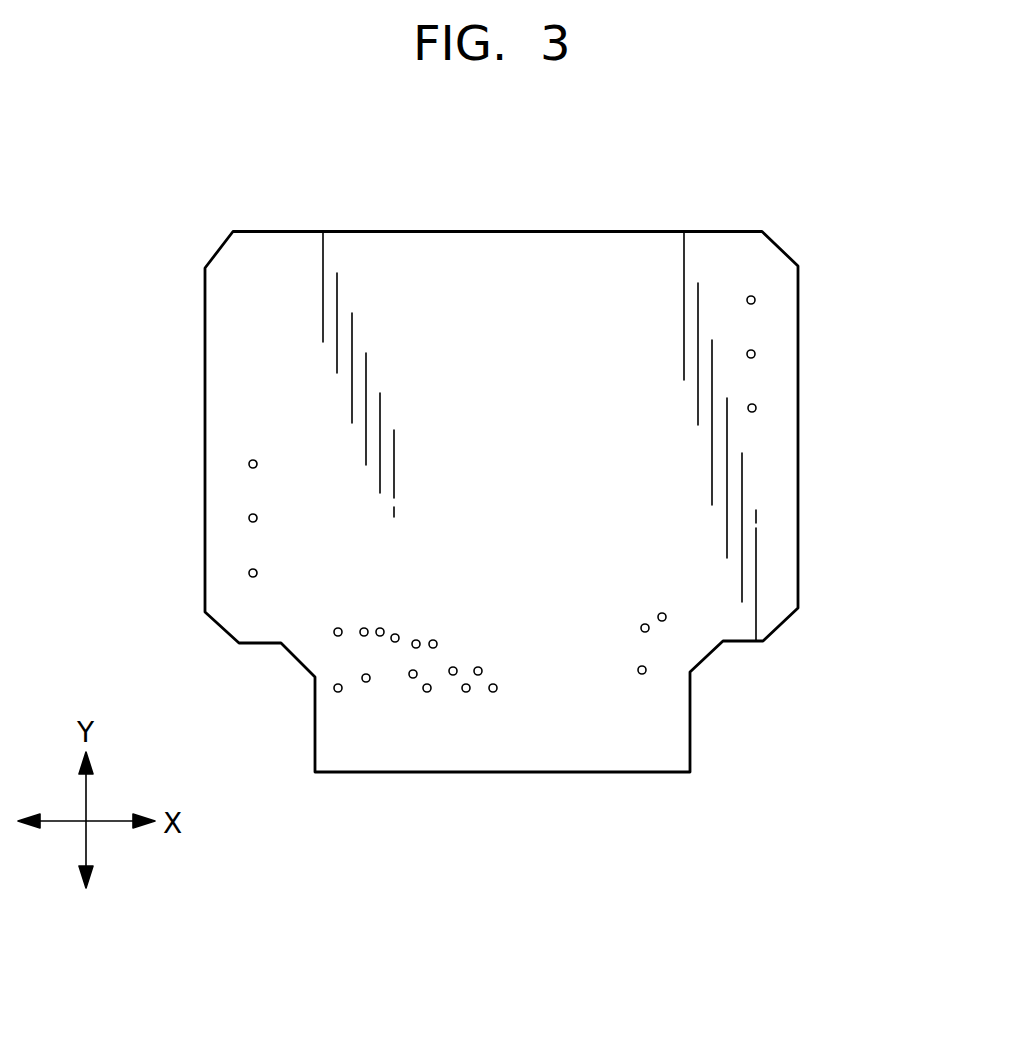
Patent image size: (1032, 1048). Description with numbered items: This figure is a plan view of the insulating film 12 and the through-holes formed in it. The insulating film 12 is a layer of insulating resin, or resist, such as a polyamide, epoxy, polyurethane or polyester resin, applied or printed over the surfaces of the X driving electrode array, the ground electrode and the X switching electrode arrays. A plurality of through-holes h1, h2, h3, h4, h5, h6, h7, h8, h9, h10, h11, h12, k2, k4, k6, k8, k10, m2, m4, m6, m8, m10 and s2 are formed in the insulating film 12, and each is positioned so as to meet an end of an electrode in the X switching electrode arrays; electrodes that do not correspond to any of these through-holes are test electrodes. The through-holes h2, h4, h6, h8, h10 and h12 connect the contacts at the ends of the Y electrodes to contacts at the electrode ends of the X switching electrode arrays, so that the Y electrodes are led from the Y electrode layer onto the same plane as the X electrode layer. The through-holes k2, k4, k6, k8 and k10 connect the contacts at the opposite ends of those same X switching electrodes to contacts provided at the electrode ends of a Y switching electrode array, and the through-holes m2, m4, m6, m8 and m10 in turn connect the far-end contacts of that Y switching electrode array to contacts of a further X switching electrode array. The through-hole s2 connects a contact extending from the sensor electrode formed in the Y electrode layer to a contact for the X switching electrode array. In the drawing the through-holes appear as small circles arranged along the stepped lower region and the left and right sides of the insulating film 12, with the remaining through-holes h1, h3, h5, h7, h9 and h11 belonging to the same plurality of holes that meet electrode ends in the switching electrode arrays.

The insulating film 12 is at (642, 232).
The through-hole h1 is at (494, 693).
The through-hole h2 is at (755, 300).
The through-hole h3 is at (467, 693).
The through-hole h4 is at (755, 354).
The through-hole h5 is at (434, 640).
The through-hole h6 is at (756, 408).
The through-hole h7 is at (428, 693).
The through-hole h8 is at (249, 464).
The through-hole h9 is at (394, 633).
The through-hole h10 is at (249, 518).
The through-hole h11 is at (362, 637).
The through-hole h12 is at (249, 573).
The through-hole k2 is at (646, 671).
The through-hole k4 is at (649, 631).
The through-hole k6 is at (666, 617).
The through-hole k8 is at (366, 683).
The through-hole k10 is at (334, 632).
The through-hole m2 is at (481, 668).
The through-hole m4 is at (455, 667).
The through-hole m6 is at (417, 640).
The through-hole m8 is at (413, 679).
The through-hole m10 is at (379, 628).
The through-hole s2 is at (337, 692).